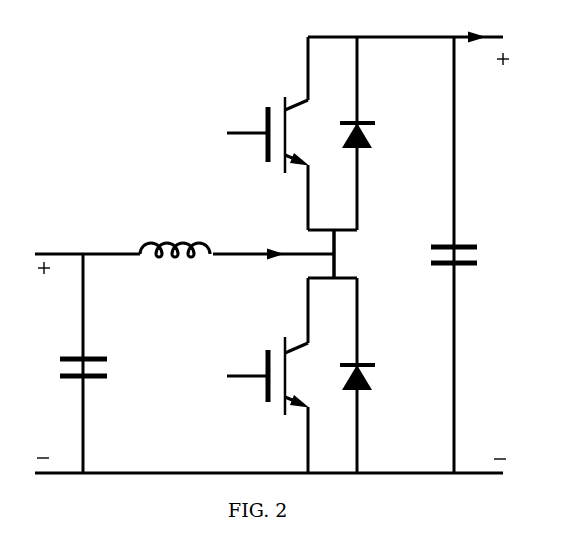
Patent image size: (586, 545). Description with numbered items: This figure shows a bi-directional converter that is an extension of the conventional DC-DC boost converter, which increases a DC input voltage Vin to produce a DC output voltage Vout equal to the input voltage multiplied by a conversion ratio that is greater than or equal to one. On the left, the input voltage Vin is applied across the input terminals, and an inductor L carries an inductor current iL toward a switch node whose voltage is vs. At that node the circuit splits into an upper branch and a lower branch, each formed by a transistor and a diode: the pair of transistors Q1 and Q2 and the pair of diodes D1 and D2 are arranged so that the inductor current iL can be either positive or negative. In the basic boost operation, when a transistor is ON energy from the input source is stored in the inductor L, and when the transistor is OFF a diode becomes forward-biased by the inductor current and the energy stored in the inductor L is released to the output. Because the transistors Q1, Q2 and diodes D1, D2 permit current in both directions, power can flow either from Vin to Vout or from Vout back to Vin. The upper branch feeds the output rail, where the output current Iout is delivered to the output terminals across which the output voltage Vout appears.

The output current Iout is at (471, 24).
The inductor L is at (175, 233).
The inductor current iL is at (272, 241).
The switch node voltage vs is at (350, 254).
The transistor Q1 is at (272, 133).
The diode D1 is at (371, 133).
The transistor Q2 is at (272, 375).
The diode D2 is at (371, 375).
The output voltage Vout is at (477, 256).
The input voltage Vin is at (63, 366).